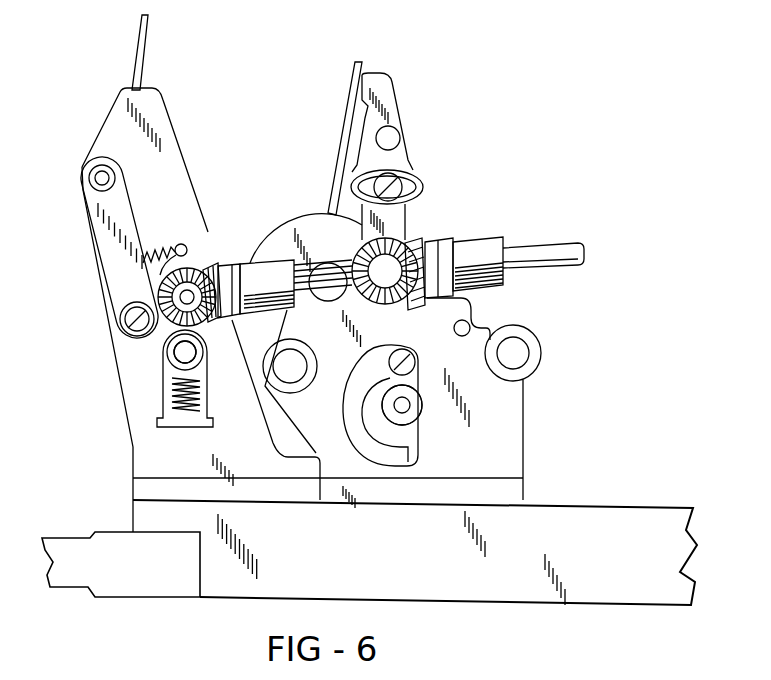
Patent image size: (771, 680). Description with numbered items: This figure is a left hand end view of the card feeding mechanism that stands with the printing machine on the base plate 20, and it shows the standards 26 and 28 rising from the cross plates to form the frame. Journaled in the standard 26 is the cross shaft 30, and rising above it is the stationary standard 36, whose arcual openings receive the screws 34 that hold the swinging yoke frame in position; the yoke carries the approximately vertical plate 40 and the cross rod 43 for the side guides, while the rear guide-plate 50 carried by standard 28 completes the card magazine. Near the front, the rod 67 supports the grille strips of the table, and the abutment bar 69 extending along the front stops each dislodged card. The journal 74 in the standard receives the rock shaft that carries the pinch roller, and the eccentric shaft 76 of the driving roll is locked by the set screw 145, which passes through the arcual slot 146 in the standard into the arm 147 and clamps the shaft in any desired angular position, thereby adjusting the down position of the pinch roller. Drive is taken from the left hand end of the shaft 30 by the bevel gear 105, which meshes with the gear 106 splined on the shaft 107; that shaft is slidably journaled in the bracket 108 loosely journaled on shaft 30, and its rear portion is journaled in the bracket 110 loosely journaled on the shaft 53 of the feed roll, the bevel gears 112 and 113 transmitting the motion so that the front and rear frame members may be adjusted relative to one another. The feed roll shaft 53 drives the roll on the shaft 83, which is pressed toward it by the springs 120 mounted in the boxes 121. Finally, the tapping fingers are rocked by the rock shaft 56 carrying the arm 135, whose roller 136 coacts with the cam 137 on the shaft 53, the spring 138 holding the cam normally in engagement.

The base plate 20 is at (369, 552).
The standard 26 is at (393, 409).
The standard 28 is at (302, 294).
The cross shaft 30 is at (362, 246).
The screw 34 is at (411, 178).
The stationary standard 36 is at (383, 222).
The vertical plate 40 is at (350, 94).
The cross rod 43 is at (398, 137).
The rear guide-plate 50 is at (142, 60).
The shaft 53 is at (183, 302).
The rock shaft 56 is at (103, 177).
The rod 67 is at (462, 336).
The abutment bar 69 is at (478, 307).
The journal 74 is at (517, 357).
The eccentric shaft 76 is at (410, 407).
The shaft 83 is at (178, 363).
The bevel gear 105 is at (400, 237).
The gear 106 is at (426, 240).
The shaft 107 is at (552, 256).
The bracket 108 is at (464, 267).
The bracket 110 is at (285, 289).
The bevel gear 112 is at (214, 270).
The bevel gear 113 is at (192, 290).
The spring 120 is at (200, 400).
The box 121 is at (204, 370).
The arm 135 is at (103, 247).
The roller 136 is at (124, 322).
The cam 137 is at (183, 245).
The spring 138 is at (144, 245).
The set screw 145 is at (412, 355).
The arcual slot 146 is at (358, 386).
The arm 147 is at (422, 388).